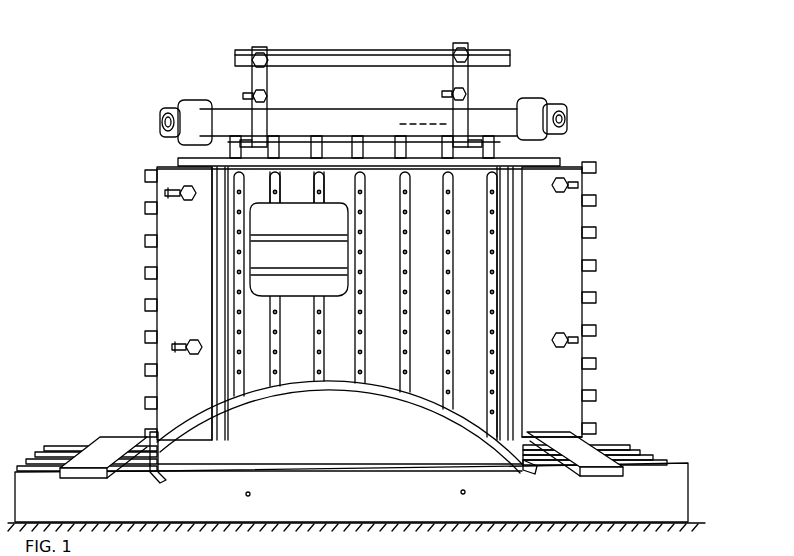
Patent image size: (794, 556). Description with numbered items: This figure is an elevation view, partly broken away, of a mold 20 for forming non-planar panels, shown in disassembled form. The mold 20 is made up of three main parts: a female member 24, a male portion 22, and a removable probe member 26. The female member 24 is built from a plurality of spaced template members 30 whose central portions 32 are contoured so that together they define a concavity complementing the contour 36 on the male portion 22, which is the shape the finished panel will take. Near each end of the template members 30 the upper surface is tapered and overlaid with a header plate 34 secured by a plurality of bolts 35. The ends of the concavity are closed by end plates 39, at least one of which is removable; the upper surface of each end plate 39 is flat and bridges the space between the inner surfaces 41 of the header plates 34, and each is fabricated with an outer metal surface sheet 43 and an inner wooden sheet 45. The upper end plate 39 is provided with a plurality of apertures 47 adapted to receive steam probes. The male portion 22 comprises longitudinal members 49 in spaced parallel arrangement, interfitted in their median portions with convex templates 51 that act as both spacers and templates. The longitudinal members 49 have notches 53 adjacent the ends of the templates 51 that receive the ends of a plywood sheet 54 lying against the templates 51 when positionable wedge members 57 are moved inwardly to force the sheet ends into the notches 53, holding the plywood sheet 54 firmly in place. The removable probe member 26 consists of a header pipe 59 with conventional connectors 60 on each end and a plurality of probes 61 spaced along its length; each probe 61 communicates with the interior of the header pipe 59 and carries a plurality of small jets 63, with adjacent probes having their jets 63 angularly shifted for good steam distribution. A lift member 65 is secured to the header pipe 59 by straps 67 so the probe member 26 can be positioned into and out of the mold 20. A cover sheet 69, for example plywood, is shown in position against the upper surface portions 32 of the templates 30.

The mold 20 is at (650, 295).
The male portion 22 is at (690, 493).
The female member 24 is at (567, 252).
The removable probe member 26 is at (493, 100).
The template members 30 is at (597, 360).
The central portions 32 is at (335, 246).
The header plate 34 is at (173, 223).
The bolts 35 is at (165, 193).
The contour 36 is at (400, 390).
The end plates 39 is at (290, 163).
The inner surfaces 41 is at (213, 205).
The outer metal surface sheet 43 is at (540, 156).
The inner wooden sheet 45 is at (387, 158).
The apertures 47 is at (322, 199).
The longitudinal members 49 is at (650, 448).
The convex templates 51 is at (350, 450).
The notches 53 is at (150, 467).
The plywood sheet 54 is at (213, 436).
The wedge members 57 is at (90, 460).
The header pipe 59 is at (218, 110).
The connectors 60 is at (172, 112).
The probes 61 is at (297, 147).
The jets 63 is at (237, 323).
The lift member 65 is at (345, 52).
The straps 67 is at (268, 80).
The cover sheet 69 is at (437, 311).